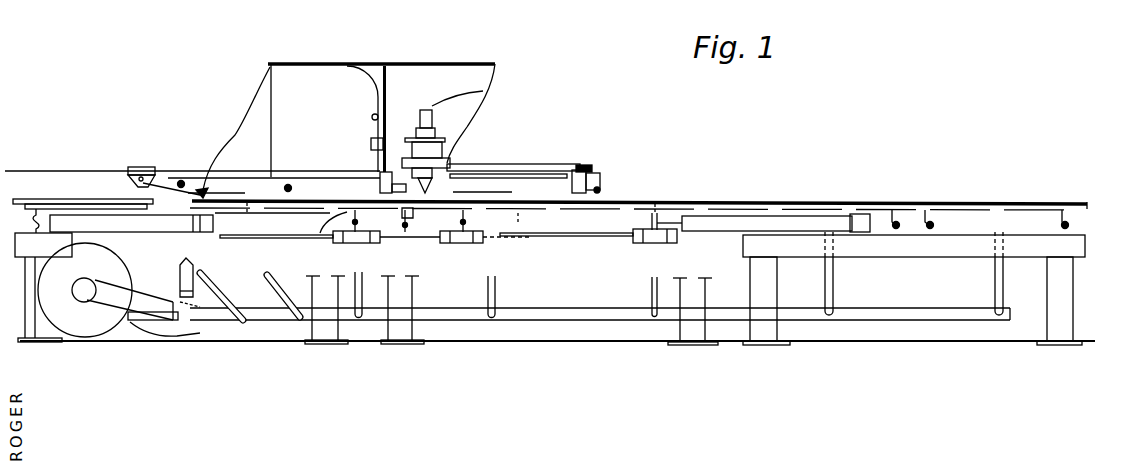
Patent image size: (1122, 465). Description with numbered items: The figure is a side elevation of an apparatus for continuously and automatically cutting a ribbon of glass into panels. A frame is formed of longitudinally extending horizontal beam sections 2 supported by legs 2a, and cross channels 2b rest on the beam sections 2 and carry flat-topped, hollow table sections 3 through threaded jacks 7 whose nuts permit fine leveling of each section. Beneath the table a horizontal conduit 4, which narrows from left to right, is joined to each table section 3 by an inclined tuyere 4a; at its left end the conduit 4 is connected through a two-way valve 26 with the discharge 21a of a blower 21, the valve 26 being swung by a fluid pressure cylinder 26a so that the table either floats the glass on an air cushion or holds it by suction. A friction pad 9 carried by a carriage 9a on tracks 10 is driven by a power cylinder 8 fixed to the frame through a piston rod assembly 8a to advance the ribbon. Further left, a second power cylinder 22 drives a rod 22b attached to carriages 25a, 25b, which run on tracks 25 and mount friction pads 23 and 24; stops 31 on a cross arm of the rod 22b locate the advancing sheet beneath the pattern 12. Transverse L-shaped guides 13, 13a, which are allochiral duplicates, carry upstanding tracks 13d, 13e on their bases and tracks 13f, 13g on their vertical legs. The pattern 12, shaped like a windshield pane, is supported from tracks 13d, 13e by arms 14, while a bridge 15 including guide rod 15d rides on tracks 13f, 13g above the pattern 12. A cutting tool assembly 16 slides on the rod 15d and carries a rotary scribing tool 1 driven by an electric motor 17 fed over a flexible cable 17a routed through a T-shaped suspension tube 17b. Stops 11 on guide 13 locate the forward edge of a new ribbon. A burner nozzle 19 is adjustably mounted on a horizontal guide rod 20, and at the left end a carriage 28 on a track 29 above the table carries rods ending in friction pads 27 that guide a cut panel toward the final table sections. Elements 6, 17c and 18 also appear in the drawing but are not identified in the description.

The rotary scribing or cutting tool 1 is at (432, 185).
The horizontal beam sections 2 is at (950, 258).
The legs 2a is at (405, 290).
The cross beams or channels 2b is at (878, 237).
The table sections 3 is at (880, 203).
The conduit 4 is at (805, 307).
The pipe or tuyere 4a is at (835, 302).
The table plate 6 is at (748, 202).
The jacks 7 is at (900, 222).
The power cylinder 8 is at (858, 233).
The piston and piston rod assembly 8a is at (700, 232).
The friction pad 9 is at (670, 202).
The carriage 9a is at (636, 243).
The tracks 10 is at (572, 238).
The stops 11 is at (600, 190).
The pattern or scriber guide 12 is at (552, 168).
The guide 13 is at (592, 175).
The guide 13a is at (380, 171).
The track 13d is at (572, 183).
The track 13e is at (380, 190).
The track 13f is at (585, 165).
The track 13g is at (395, 158).
The arms 14 is at (580, 165).
The bridge 15 is at (477, 160).
The guide rod 15d is at (515, 164).
The rotary cutting or scribing tool assembly 16 is at (445, 150).
The electric motor 17 is at (425, 109).
The flexible cable 17a is at (458, 96).
The T-shaped suspension tube 17b is at (400, 63).
The frame arm 17c is at (489, 93).
The switch box 18 is at (371, 143).
The burner nozzle 19 is at (181, 180).
The guide rod 20 is at (268, 172).
The blower 21 is at (84, 325).
The outlet or discharge 21a is at (148, 325).
The power cylinder 22 is at (165, 234).
The rod 22b is at (267, 212).
The friction pad 23 is at (468, 203).
The friction pad 24 is at (322, 238).
The tracks 25 is at (238, 240).
The carriage 25a is at (486, 243).
The carriage 25b is at (378, 240).
The two-way valve 26 is at (198, 330).
The fluid pressure cylinder 26a is at (197, 272).
The friction pads 27 is at (205, 186).
The carriage 28 is at (143, 166).
The tracks 29 is at (62, 170).
The stops 31 is at (415, 240).